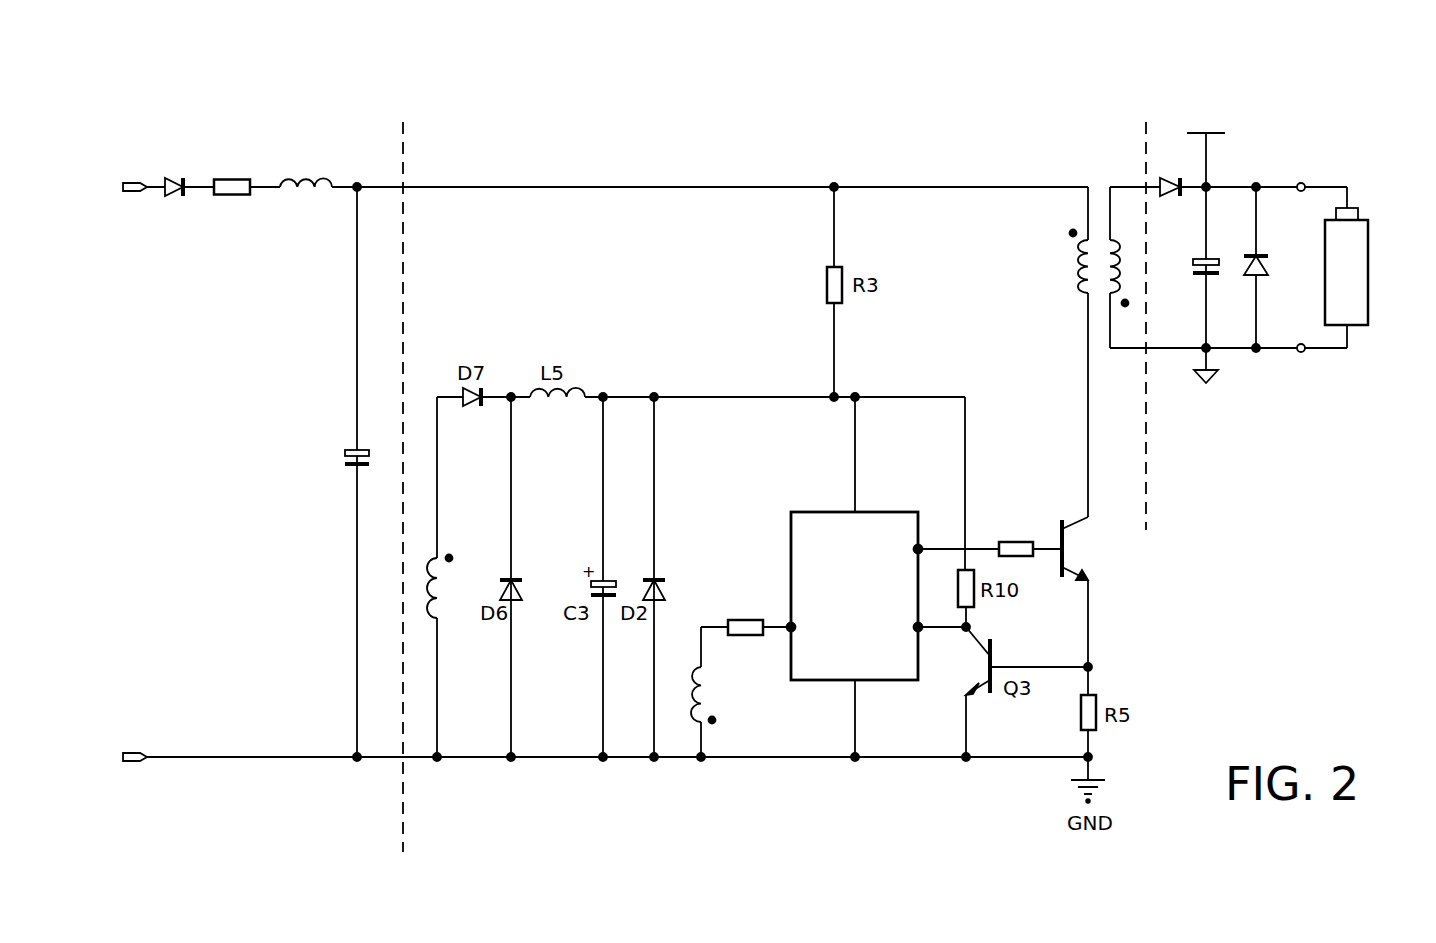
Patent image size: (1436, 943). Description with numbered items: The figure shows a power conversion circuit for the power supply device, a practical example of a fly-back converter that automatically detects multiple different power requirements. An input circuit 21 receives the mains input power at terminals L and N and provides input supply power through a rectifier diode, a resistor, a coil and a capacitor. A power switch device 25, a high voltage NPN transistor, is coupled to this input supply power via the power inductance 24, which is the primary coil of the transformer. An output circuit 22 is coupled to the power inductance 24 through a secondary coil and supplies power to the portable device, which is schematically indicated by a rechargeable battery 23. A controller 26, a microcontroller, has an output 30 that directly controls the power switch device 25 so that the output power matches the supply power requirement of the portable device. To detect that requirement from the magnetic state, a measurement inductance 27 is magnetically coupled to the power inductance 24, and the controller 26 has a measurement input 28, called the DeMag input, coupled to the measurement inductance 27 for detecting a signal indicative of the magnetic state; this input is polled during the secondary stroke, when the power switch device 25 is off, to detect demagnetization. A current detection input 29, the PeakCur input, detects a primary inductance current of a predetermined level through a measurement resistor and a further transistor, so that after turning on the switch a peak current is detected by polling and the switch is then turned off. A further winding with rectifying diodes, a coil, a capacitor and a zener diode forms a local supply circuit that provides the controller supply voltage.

The input circuit 21 is at (393, 840).
The output circuit 22 is at (1263, 318).
The rechargeable battery 23 is at (1352, 271).
The power inductance 24 is at (1078, 277).
The power switch device 25 is at (1083, 550).
The controller 26 is at (815, 512).
The measurement inductance 27 is at (703, 693).
The measurement input 28 is at (790, 627).
The current detection input 29 is at (925, 632).
The output 30 is at (918, 548).